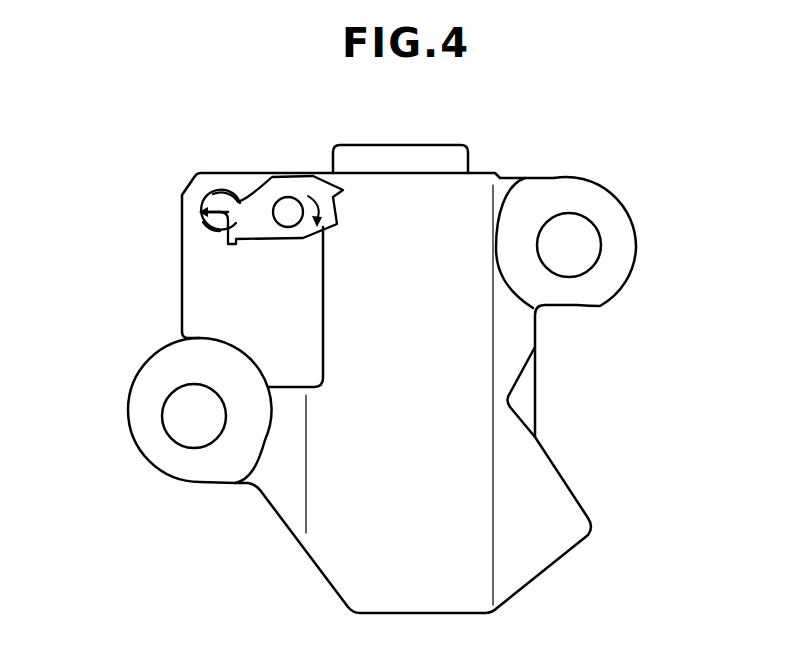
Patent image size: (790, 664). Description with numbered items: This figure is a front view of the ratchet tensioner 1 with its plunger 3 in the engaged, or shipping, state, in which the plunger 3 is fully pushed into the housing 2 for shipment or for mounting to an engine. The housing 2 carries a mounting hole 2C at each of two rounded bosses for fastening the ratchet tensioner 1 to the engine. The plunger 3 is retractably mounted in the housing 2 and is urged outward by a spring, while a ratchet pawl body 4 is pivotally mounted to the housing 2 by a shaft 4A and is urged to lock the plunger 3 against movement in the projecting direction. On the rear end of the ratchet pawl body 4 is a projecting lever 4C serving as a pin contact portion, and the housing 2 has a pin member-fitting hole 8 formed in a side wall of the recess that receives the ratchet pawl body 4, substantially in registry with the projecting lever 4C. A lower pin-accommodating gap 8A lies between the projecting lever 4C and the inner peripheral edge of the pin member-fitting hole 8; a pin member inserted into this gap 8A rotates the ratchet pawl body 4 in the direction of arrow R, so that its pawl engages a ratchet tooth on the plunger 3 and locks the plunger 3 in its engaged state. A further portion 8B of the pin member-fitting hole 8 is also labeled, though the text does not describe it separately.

The ratchet tensioner 1 is at (530, 158).
The housing 2 is at (457, 486).
The mounting hole 2C is at (590, 243).
The plunger 3 is at (400, 158).
The ratchet pawl body 4 is at (273, 188).
The shaft 4A is at (292, 200).
The projecting lever 4C is at (200, 212).
The pin member-fitting hole 8 is at (207, 191).
The lower pin-accommodating gap 8A is at (212, 229).
The upper portion of roller 8B is at (231, 200).
The arrow R is at (336, 206).